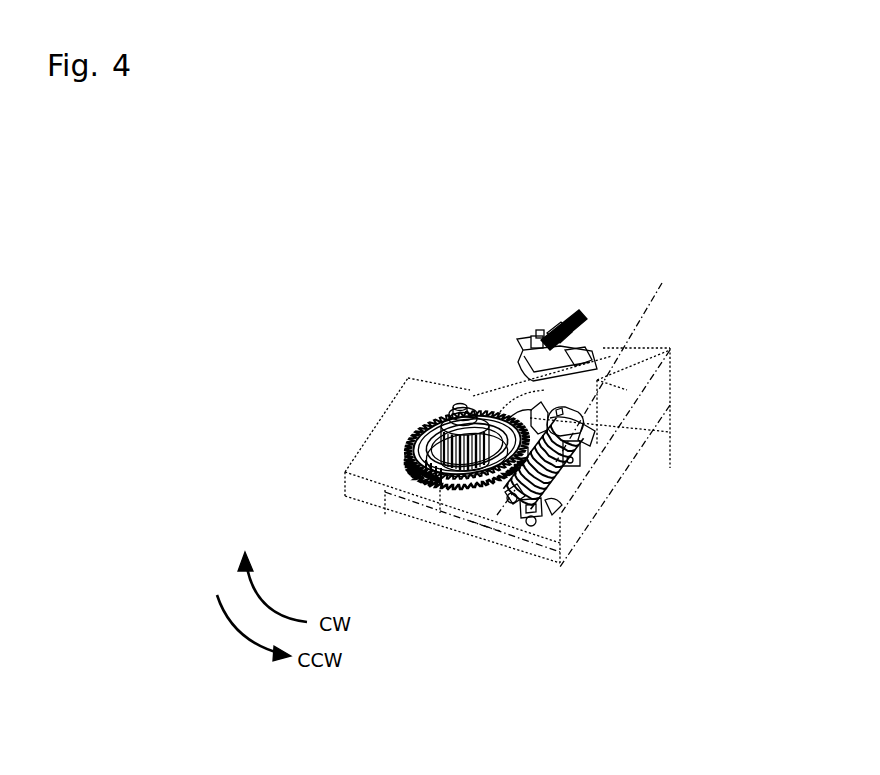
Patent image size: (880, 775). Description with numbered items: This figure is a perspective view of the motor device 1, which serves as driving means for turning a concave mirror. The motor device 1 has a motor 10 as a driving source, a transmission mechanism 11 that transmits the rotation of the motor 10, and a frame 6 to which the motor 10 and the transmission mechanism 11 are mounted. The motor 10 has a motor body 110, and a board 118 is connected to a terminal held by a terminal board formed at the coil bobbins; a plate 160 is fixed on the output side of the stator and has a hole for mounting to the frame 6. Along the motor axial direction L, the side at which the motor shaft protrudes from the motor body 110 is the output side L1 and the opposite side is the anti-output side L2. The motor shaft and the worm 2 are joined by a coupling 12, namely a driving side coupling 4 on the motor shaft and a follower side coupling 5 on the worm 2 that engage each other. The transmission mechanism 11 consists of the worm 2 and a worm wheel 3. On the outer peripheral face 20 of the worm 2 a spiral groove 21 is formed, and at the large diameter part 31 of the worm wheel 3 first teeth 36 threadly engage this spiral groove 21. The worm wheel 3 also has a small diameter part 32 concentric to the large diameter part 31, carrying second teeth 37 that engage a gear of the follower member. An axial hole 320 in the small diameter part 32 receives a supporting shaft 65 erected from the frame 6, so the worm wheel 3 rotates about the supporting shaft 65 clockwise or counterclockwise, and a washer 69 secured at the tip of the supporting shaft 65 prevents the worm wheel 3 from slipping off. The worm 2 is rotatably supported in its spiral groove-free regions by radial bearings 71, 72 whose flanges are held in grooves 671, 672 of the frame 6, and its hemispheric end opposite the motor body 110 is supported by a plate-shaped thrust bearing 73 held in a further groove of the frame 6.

The motor device 1 is at (686, 233).
The motor body 110 is at (671, 349).
The board 118 is at (550, 334).
The motor 10 is at (594, 343).
The plate 160 is at (566, 403).
The driving side coupling 4 is at (578, 440).
The follower side coupling 5 is at (580, 436).
The coupling 12 is at (706, 425).
The frame 6 is at (630, 453).
The groove 671 is at (585, 450).
The groove 672 is at (568, 518).
The outer peripheral face 20 is at (585, 504).
The spiral groove 21 is at (540, 465).
The thrust bearing 73 is at (533, 525).
The radial bearing 72 is at (510, 515).
The worm 2 is at (515, 502).
The worm wheel 3 is at (429, 545).
The transmission mechanism 11 is at (510, 679).
The large diameter part 31 is at (451, 530).
The first teeth 36 is at (418, 468).
The small diameter part 32 is at (417, 513).
The second teeth 37 is at (403, 470).
The axial hole 320 is at (440, 440).
The supporting shaft 65 is at (458, 406).
The washer 69 is at (455, 414).
The radial bearing 71 is at (537, 423).
The motor axial direction L is at (485, 548).
The output side L1 is at (497, 515).
The anti-output side L2 is at (619, 360).